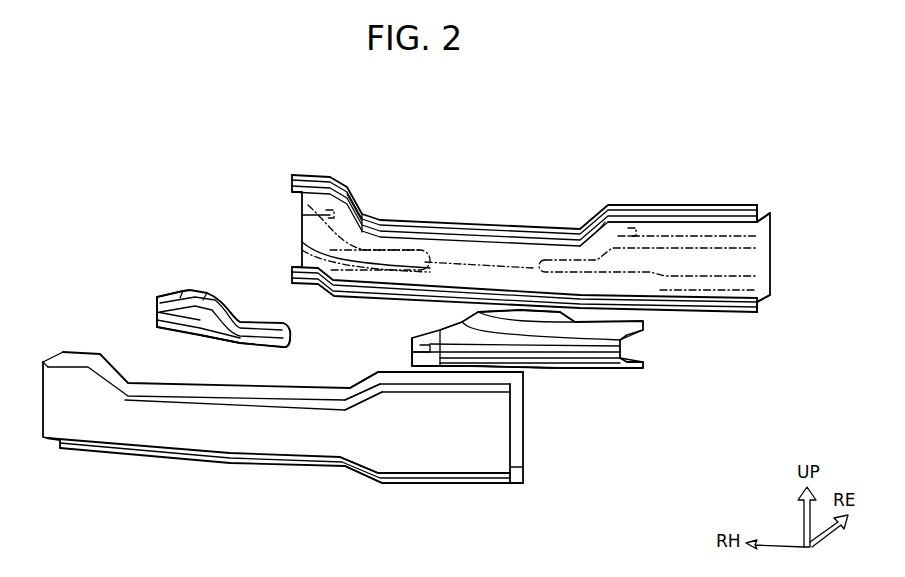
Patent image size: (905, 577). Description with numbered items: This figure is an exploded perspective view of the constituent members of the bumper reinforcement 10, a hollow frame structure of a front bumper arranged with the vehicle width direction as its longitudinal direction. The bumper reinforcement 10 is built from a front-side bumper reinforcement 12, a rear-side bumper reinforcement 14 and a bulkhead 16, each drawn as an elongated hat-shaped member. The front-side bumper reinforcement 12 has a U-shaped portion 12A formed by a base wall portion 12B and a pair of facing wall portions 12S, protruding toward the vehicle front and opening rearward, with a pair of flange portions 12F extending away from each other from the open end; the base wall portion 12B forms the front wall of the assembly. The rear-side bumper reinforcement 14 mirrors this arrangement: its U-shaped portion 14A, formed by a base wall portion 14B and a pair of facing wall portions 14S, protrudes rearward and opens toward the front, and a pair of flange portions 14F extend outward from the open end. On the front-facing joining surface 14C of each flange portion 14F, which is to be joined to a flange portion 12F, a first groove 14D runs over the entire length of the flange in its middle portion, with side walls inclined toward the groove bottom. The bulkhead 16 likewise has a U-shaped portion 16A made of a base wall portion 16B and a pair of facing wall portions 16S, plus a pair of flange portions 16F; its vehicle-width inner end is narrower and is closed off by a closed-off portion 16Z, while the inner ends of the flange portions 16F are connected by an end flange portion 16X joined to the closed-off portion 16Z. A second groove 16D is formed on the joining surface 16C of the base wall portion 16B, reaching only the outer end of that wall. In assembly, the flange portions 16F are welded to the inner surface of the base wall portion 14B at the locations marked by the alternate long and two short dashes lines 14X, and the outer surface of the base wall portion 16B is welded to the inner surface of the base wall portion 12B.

The bumper reinforcement 10 is at (663, 118).
The front-side bumper reinforcement 12 is at (283, 438).
The U-shaped portion 12A is at (458, 453).
The base wall portion 12B is at (397, 440).
The flange portions 12F is at (287, 392).
The facing wall portions 12S is at (393, 382).
The rear-side bumper reinforcement 14 is at (576, 243).
The U-shaped portion 14A is at (772, 249).
The base wall portion 14B is at (762, 262).
The joining surface 14C is at (643, 220).
The first groove 14D is at (675, 213).
The flange portions 14F is at (760, 210).
The facing wall portions 14S is at (768, 211).
The alternate long and two short dashes lines 14X is at (338, 195).
The bulkhead 16 is at (393, 345).
The U-shaped portion 16A is at (200, 340).
The base wall portion 16B is at (165, 303).
The joining surface 16C is at (158, 320).
The second groove 16D is at (160, 310).
The flange portions 16F is at (222, 308).
The facing wall portions 16S is at (192, 295).
The end flange portion 16X is at (293, 335).
The closed-off portion 16Z is at (287, 325).